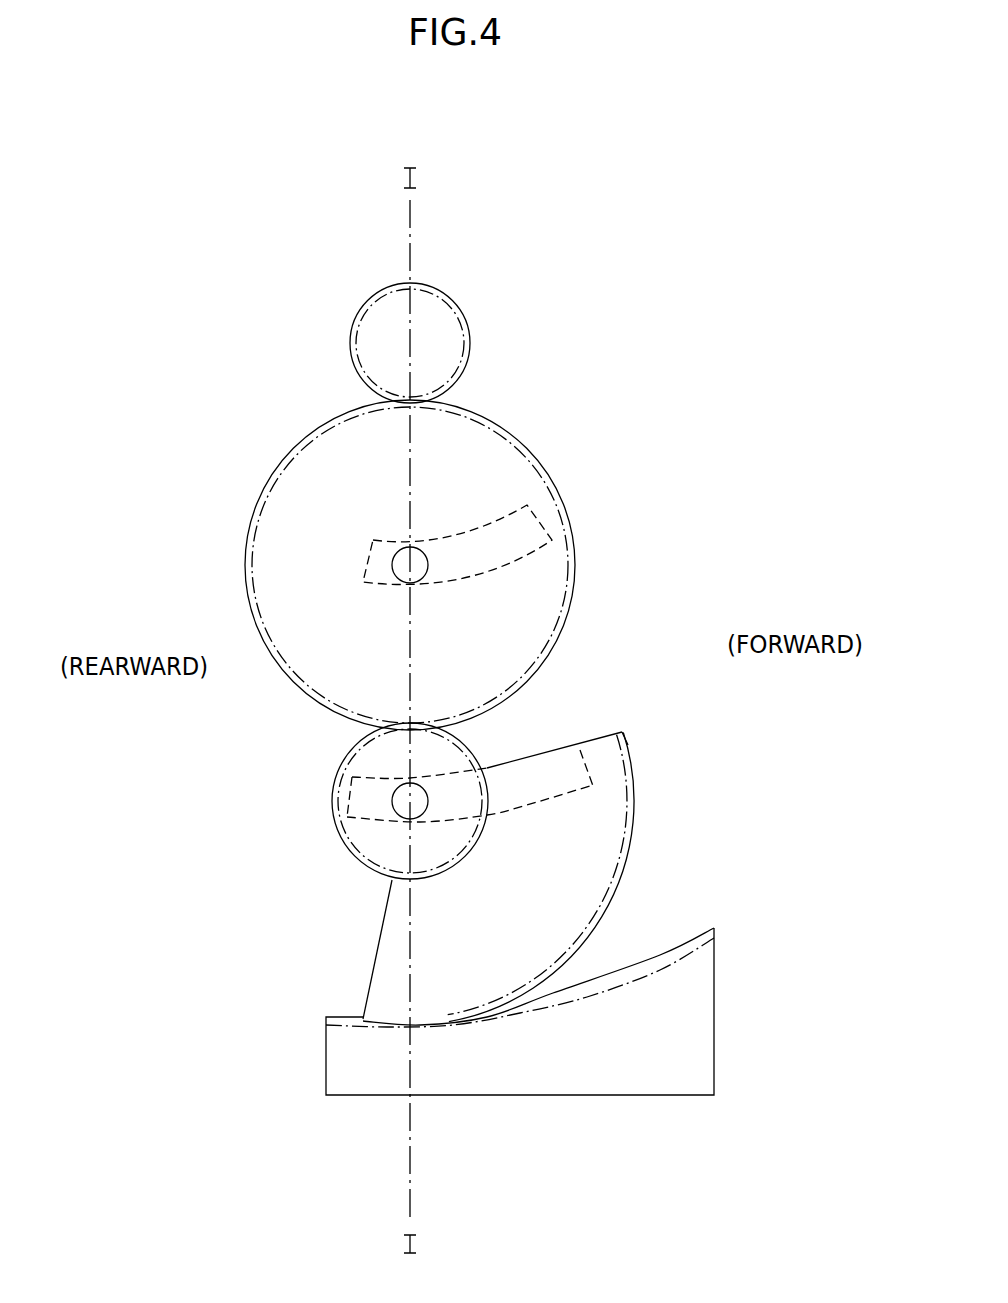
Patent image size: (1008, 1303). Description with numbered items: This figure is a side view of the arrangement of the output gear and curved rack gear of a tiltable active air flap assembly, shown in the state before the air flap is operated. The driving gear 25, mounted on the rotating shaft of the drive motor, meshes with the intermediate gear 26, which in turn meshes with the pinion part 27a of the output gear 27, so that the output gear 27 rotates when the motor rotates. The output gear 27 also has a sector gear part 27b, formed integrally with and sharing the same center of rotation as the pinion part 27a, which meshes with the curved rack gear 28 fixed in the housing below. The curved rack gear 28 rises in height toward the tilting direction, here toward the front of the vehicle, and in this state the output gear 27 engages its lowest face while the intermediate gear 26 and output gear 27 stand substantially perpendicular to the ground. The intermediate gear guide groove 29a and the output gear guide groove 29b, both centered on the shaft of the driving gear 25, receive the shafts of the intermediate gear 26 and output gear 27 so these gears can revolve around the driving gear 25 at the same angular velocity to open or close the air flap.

The driving gear 25 is at (435, 338).
The intermediate gear 26 is at (493, 467).
The output gear 27 is at (150, 860).
The pinion part 27a is at (370, 843).
The sector gear part 27b is at (395, 977).
The curved rack gear 28 is at (668, 1058).
The intermediate gear guide groove 29a is at (540, 521).
The output gear guide groove 29b is at (587, 763).